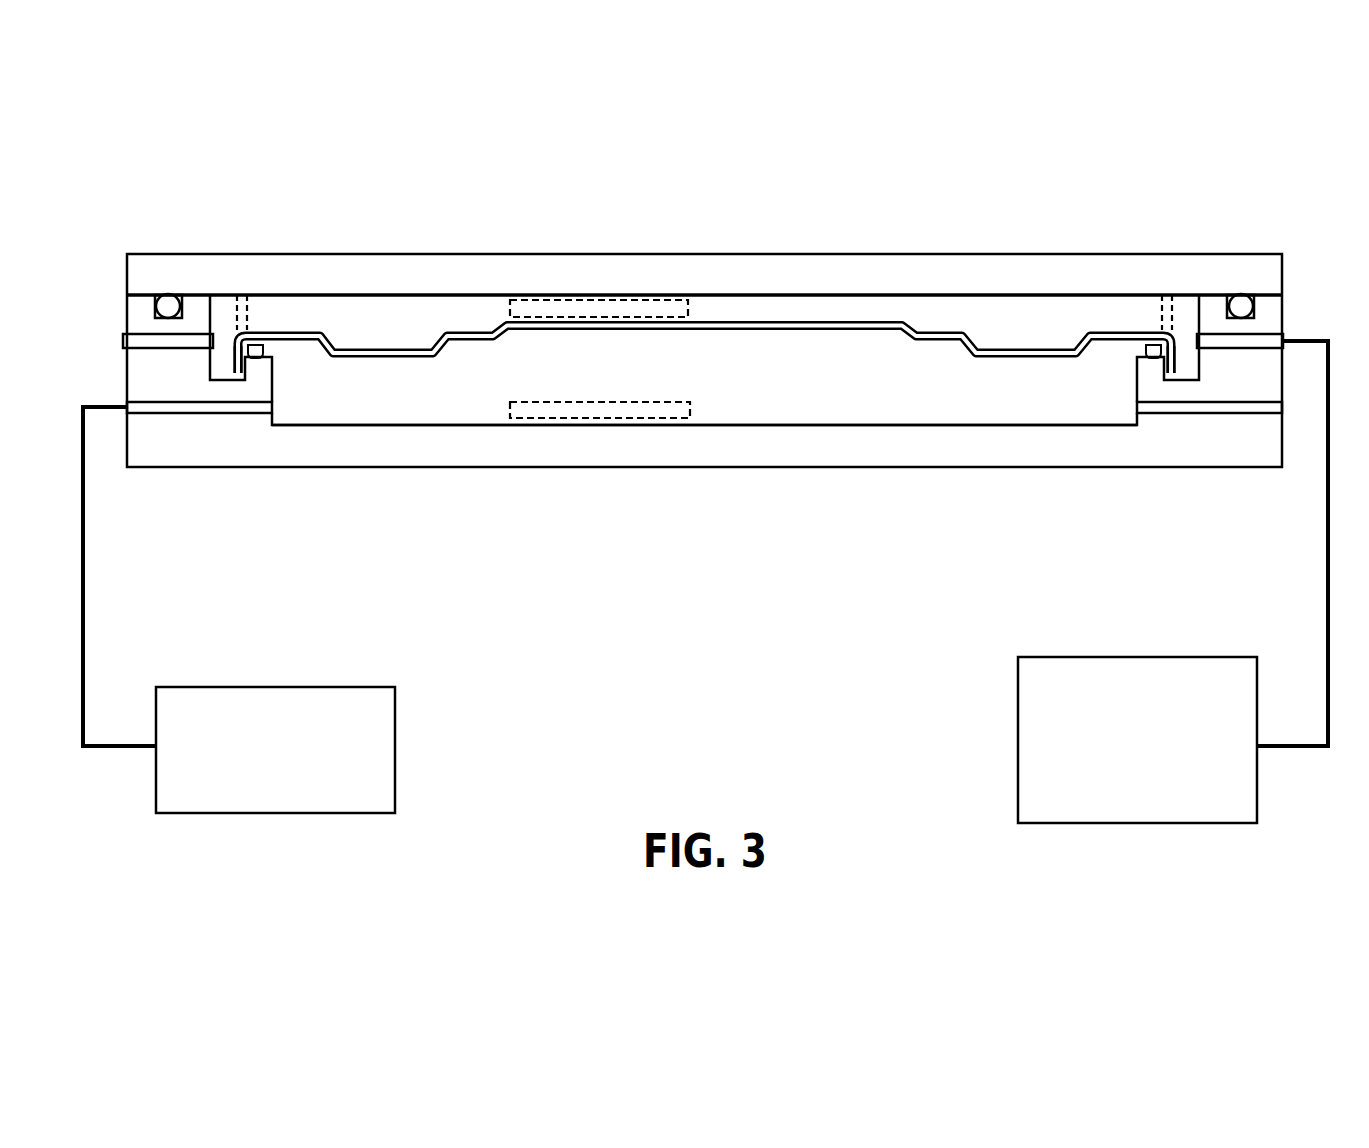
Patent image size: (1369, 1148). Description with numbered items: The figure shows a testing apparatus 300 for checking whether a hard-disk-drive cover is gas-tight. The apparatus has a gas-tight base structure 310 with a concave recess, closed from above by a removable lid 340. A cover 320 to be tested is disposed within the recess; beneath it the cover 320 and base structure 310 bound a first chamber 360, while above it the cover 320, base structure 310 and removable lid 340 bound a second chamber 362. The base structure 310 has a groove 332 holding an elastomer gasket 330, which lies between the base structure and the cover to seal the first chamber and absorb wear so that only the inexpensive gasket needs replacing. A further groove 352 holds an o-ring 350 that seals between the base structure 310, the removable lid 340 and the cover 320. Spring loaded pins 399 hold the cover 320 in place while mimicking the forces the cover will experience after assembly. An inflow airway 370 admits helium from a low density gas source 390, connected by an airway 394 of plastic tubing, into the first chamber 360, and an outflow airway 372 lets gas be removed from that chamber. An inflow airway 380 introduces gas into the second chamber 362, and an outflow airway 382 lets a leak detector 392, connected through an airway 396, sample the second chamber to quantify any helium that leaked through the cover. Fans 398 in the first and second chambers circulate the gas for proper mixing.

The testing apparatus 300 is at (396, 625).
The base structure 310 is at (138, 320).
The cover 320 is at (708, 323).
The elastomer gasket 330 is at (252, 336).
The groove 332 is at (255, 362).
The removable lid 340 is at (436, 280).
The o-ring 350 is at (164, 294).
The groove 352 is at (138, 305).
The first chamber 360 is at (396, 400).
The second chamber 362 is at (401, 333).
The inflow airway 370 is at (155, 407).
The outflow airway 372 is at (1257, 408).
The inflow airway 380 is at (167, 338).
The outflow airway 382 is at (1268, 341).
The low density gas source 390 is at (291, 785).
The leak detector 392 is at (1157, 771).
The airway 394 is at (123, 750).
The airway 396 is at (1305, 750).
The fan 398 is at (655, 307).
The spring loaded pin 399 is at (232, 300).